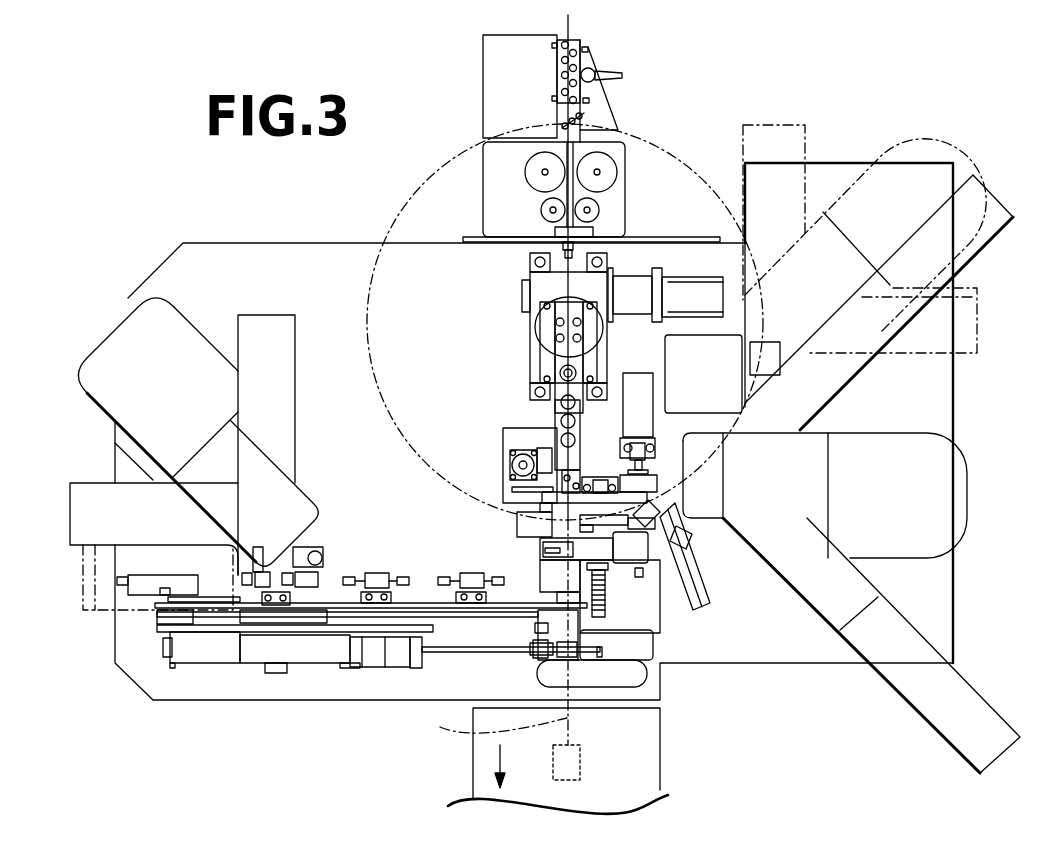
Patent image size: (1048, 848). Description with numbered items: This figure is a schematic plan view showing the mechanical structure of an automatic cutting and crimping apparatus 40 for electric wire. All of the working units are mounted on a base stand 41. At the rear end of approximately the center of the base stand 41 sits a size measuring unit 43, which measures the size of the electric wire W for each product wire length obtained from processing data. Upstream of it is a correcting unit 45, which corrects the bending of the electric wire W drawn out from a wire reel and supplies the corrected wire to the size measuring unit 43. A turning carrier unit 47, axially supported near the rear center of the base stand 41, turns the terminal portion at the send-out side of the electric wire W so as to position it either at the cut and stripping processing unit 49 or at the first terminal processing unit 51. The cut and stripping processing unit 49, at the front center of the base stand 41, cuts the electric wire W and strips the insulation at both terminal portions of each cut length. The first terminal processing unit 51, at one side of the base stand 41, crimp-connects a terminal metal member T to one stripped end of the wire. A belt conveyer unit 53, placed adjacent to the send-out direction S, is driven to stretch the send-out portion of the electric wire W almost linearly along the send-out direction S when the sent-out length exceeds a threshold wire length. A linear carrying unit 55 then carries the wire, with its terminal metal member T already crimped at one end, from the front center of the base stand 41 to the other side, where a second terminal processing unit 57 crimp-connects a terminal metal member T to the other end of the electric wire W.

The automatic cutting and crimping apparatus 40 is at (672, 140).
The base stand 41 is at (271, 252).
The size measuring unit 43 is at (483, 208).
The correcting unit 45 is at (483, 82).
The turning carrier unit 47 is at (531, 354).
The cut and stripping processing unit 49 is at (503, 452).
The first terminal processing unit 51 is at (967, 480).
The belt conveyer unit 53 is at (662, 762).
The linear carrying unit 55 is at (423, 600).
The second terminal processing unit 57 is at (97, 343).
The electric wire W is at (487, 743).
The send-out direction S is at (490, 752).
The terminal metal member T is at (580, 772).